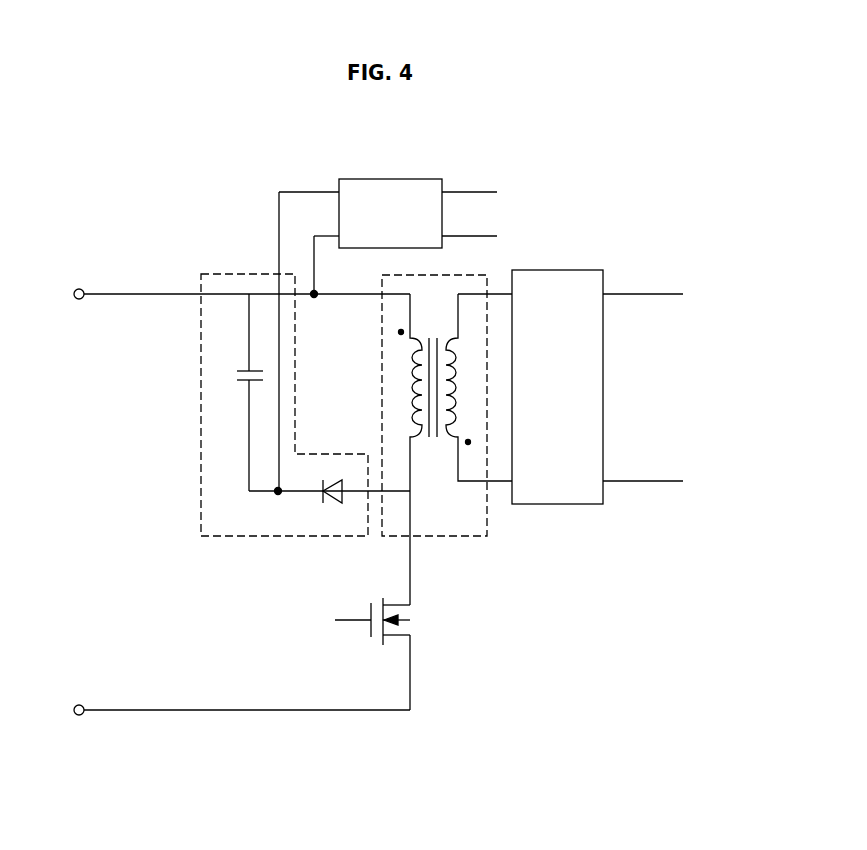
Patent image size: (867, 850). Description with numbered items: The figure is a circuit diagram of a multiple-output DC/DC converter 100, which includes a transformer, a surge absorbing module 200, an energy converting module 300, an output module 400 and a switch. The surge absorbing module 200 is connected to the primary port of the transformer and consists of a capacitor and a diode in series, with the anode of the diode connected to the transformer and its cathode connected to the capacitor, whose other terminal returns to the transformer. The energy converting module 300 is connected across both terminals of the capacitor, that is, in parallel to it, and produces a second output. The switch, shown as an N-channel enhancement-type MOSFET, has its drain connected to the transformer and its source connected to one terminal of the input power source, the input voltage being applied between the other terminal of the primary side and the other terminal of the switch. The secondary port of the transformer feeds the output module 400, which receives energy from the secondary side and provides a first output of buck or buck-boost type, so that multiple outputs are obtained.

The multiple-output DC/DC converter 100 is at (103, 154).
The surge absorbing module 200 is at (260, 536).
The energy converting module 300 is at (388, 177).
The output module 400 is at (557, 504).